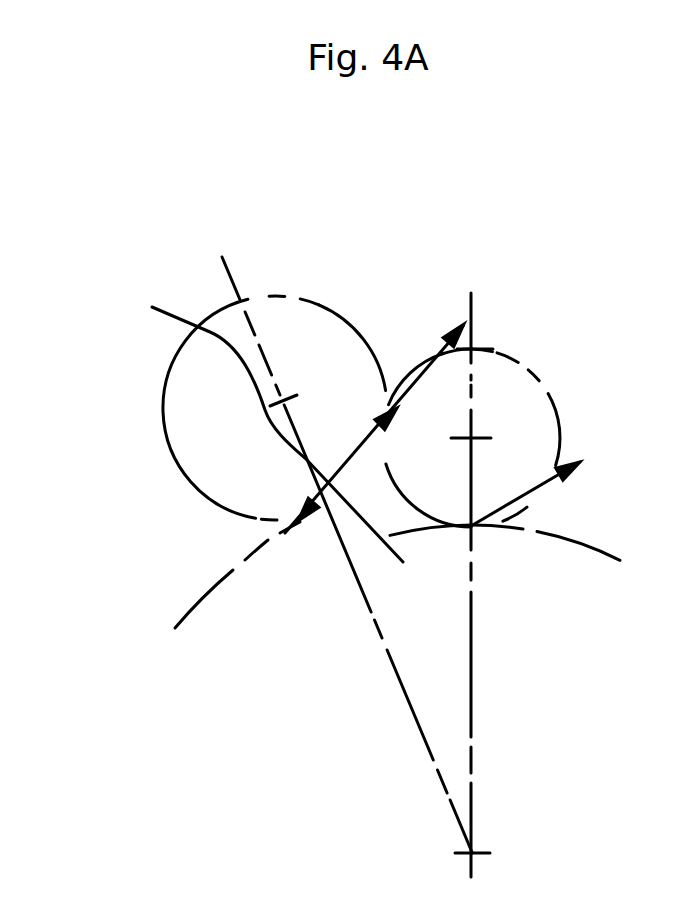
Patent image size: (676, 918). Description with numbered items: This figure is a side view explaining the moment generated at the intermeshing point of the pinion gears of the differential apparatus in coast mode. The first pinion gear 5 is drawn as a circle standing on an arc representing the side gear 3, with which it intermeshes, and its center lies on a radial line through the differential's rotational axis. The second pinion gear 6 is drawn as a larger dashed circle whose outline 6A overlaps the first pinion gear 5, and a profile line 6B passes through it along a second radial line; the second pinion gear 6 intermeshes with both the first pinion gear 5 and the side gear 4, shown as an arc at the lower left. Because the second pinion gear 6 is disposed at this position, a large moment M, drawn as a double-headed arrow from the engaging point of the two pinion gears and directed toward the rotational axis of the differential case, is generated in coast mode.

The side gear 3 is at (575, 533).
The side gear 4 is at (208, 580).
The first pinion gear 5 is at (513, 342).
The second pinion gear 6 is at (208, 312).
The tool outer arc 6A is at (320, 300).
The cutting edge profile 6B is at (163, 377).
The moment M is at (353, 443).